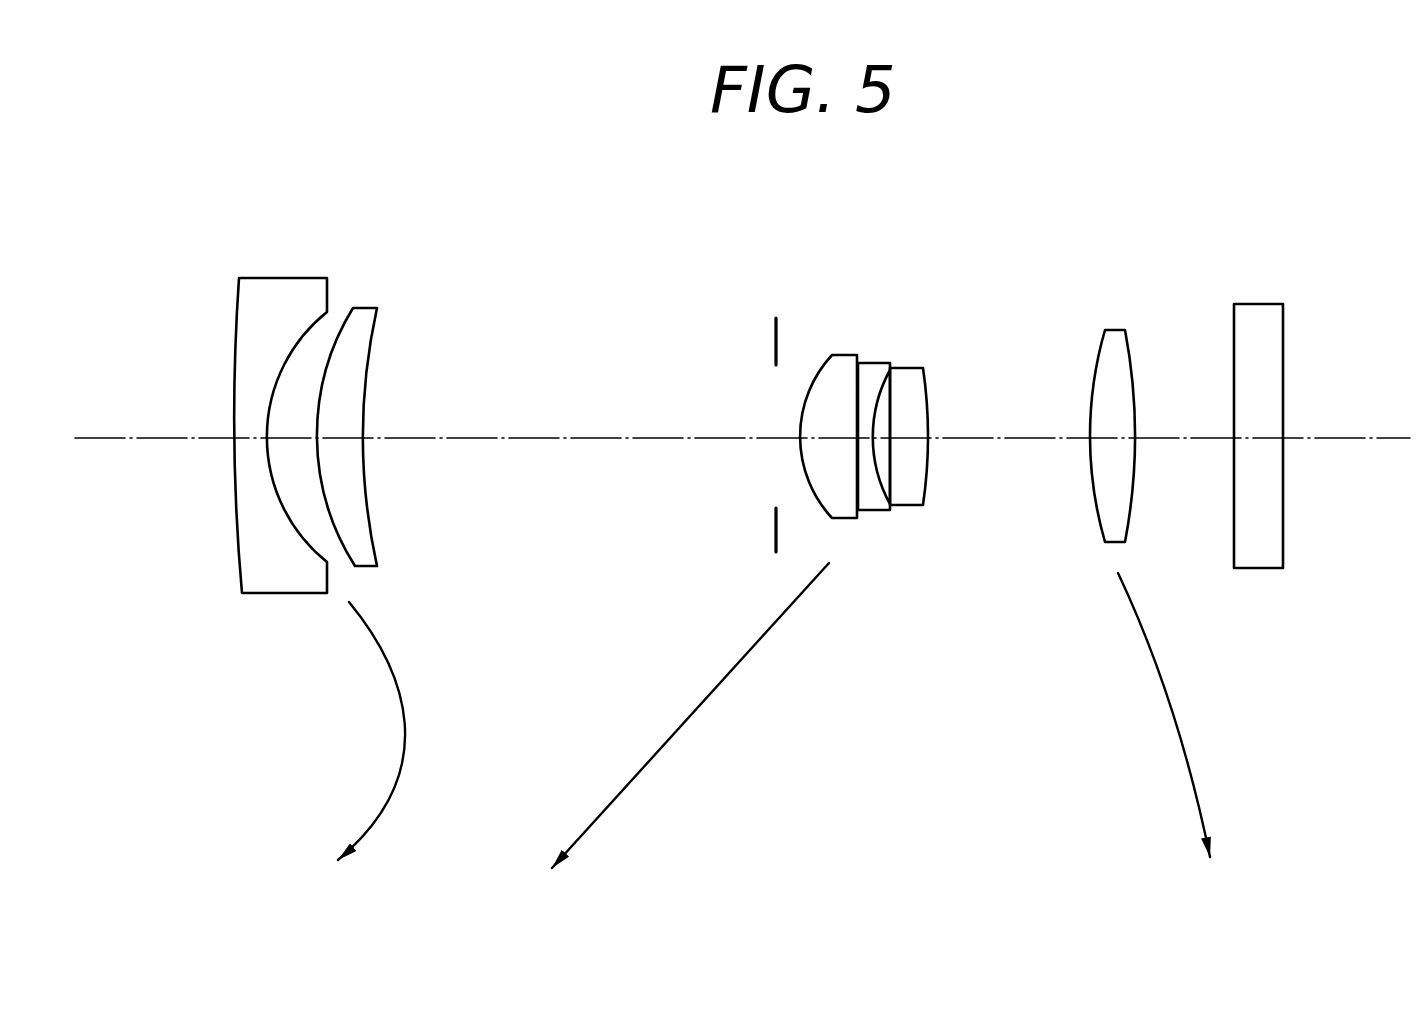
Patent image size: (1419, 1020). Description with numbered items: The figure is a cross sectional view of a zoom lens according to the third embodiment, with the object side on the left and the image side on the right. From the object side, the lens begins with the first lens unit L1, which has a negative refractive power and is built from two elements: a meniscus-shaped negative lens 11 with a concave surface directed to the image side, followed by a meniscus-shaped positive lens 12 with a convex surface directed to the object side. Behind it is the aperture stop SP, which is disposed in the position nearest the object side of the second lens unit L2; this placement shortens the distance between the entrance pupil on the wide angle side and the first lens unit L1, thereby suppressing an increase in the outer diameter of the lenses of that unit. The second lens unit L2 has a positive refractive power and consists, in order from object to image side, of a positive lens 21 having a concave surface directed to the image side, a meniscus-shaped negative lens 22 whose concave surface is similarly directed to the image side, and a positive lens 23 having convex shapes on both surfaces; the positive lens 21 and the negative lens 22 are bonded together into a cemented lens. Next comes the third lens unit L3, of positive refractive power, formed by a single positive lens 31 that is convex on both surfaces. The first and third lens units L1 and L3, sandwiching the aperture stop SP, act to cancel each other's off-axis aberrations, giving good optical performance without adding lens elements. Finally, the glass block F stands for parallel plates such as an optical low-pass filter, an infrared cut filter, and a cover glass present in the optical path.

The first lens unit L1 is at (217, 212).
The meniscus-shaped negative lens 11 is at (280, 278).
The meniscus-shaped positive lens 12 is at (357, 308).
The aperture stop SP is at (776, 335).
The second lens unit L2 is at (763, 282).
The positive lens 21 is at (835, 355).
The meniscus-shaped negative lens 22 is at (878, 363).
The positive lens 23 is at (907, 368).
The third lens unit L3 is at (1159, 278).
The positive lens 31 is at (1112, 330).
The glass block F is at (1283, 328).